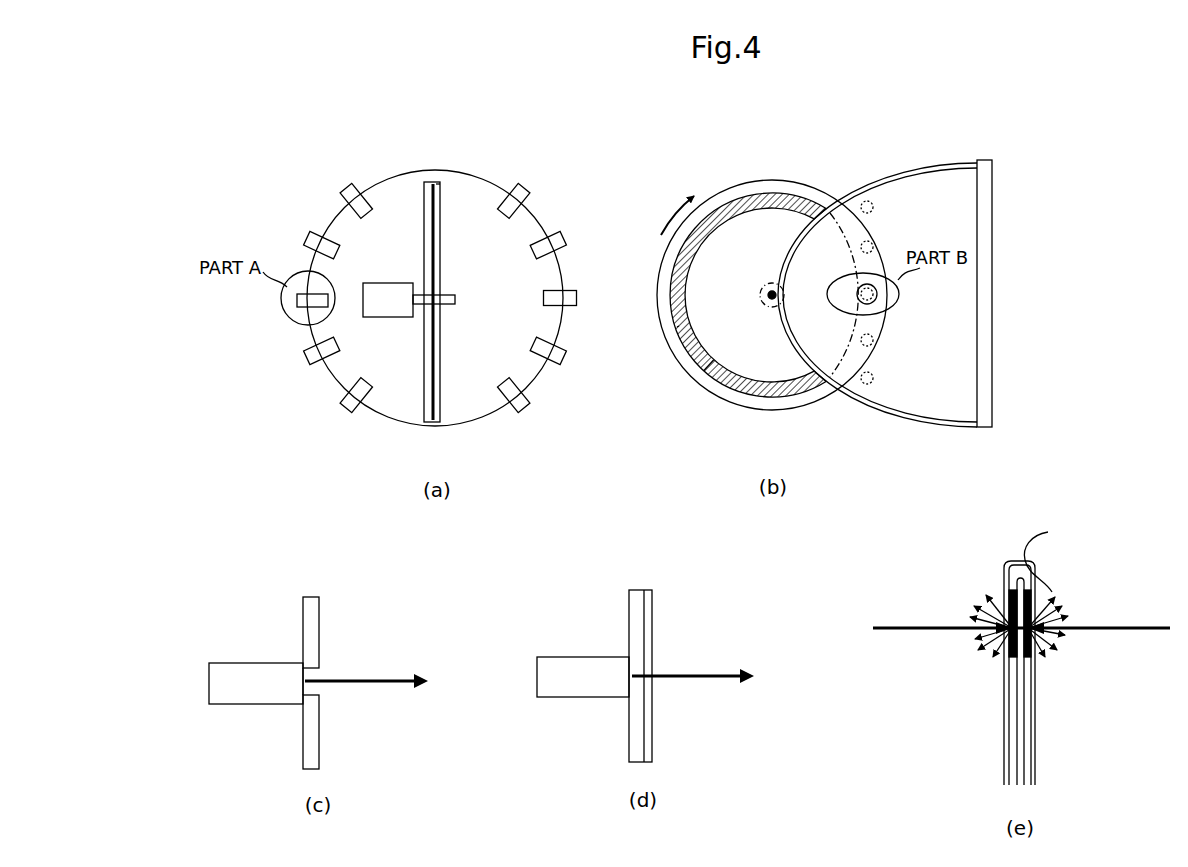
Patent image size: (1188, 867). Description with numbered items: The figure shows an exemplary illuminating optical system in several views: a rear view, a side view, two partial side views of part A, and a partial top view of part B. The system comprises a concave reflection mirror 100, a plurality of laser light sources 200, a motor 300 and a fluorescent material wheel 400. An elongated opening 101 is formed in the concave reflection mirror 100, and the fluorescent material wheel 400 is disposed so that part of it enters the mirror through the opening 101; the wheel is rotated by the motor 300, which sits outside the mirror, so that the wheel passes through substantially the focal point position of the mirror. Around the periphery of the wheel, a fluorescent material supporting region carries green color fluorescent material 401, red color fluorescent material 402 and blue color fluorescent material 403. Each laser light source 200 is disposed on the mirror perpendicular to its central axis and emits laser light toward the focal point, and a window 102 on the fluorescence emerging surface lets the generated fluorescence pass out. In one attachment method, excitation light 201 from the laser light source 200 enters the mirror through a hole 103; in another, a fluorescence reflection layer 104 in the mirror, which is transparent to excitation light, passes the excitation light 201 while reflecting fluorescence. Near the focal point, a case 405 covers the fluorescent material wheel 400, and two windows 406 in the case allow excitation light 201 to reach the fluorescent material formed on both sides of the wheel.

The concave reflection mirror 100 is at (426, 180).
The elongated opening 101 is at (441, 192).
The window 102 is at (992, 198).
The hole 103 is at (320, 692).
The fluorescence reflection layer 104 is at (653, 703).
The laser light source 200 is at (350, 199).
The excitation light 201 is at (373, 677).
The motor 300 is at (363, 310).
The fluorescent material wheel 400 is at (437, 186).
The green color fluorescent material 401 is at (785, 193).
The red color fluorescent material 402 is at (677, 327).
The blue color fluorescent material 403 is at (717, 377).
The case 405 is at (1007, 763).
The window 406 is at (1008, 650).